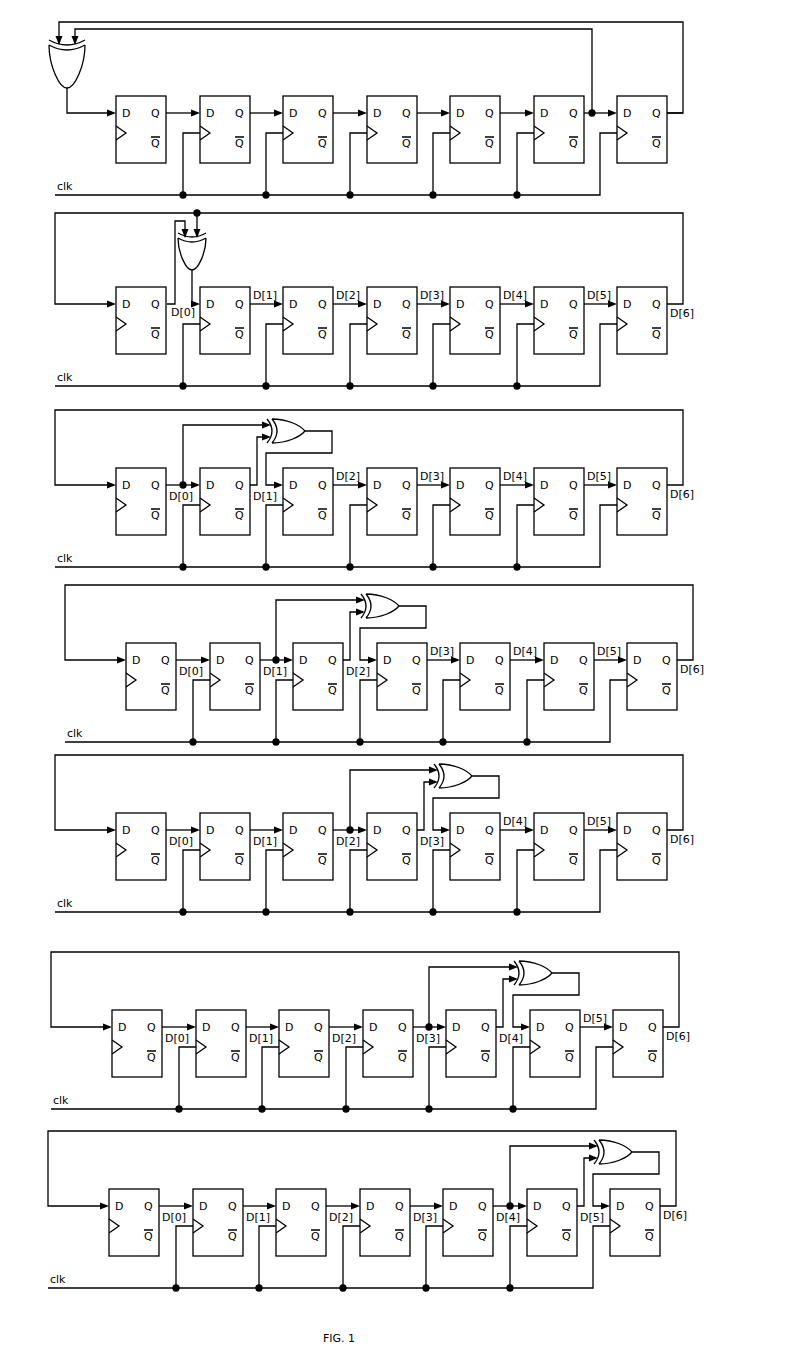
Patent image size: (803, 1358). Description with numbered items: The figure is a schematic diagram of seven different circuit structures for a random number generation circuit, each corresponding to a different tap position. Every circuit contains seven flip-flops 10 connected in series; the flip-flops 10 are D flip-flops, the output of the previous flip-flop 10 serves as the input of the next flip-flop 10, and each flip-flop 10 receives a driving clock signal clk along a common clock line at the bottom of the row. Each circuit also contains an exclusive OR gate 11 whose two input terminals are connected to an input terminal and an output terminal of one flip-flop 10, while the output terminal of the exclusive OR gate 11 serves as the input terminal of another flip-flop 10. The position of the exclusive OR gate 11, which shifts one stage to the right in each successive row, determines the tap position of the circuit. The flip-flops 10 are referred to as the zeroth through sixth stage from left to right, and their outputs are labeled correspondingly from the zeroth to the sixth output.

The flip-flop 10 is at (131, 95).
The exclusive OR gate 11 is at (82, 67).
The driving clock signal clk is at (336, 165).